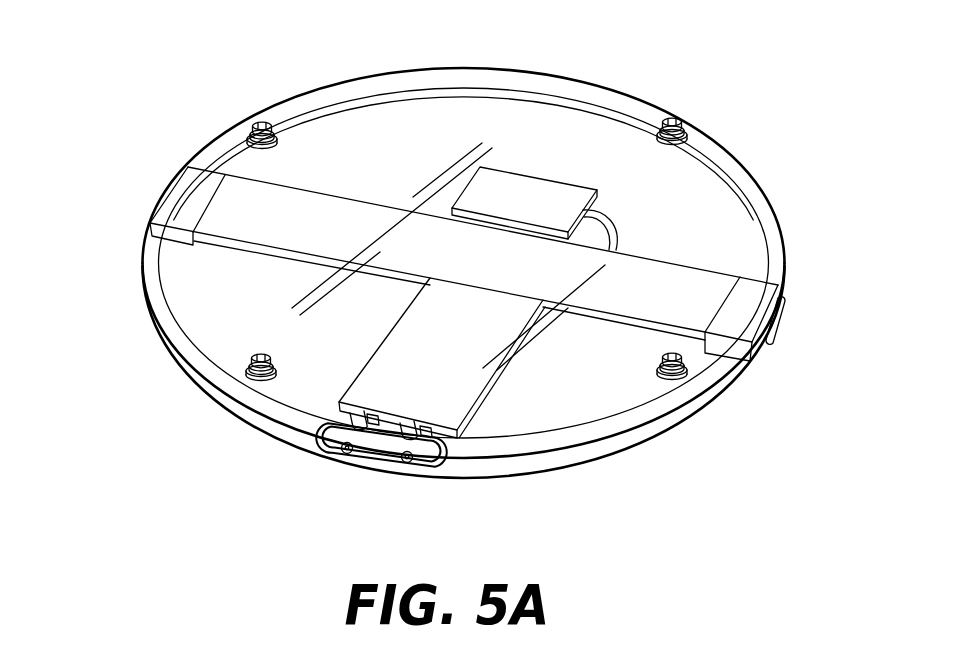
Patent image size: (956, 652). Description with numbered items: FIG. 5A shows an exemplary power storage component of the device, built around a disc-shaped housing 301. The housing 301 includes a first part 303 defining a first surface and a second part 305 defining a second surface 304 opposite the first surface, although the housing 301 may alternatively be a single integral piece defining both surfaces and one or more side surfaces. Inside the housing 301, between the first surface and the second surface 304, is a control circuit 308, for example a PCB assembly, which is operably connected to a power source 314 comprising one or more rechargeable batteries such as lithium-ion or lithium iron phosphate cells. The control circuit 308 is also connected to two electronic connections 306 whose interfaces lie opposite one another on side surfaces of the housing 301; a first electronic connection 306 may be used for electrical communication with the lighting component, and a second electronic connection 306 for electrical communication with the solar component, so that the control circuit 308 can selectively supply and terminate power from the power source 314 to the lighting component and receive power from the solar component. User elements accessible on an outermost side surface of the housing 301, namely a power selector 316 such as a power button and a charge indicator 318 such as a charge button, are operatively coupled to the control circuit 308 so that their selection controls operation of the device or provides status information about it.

The housing 301 is at (723, 151).
The first part 303 is at (588, 455).
The second surface 304 is at (402, 86).
The second part 305 is at (650, 417).
The electronic connection 306 is at (183, 208).
The control circuit 308 is at (385, 388).
The power source 314 is at (523, 188).
The power selector 316 is at (404, 467).
The charge indicator 318 is at (345, 460).